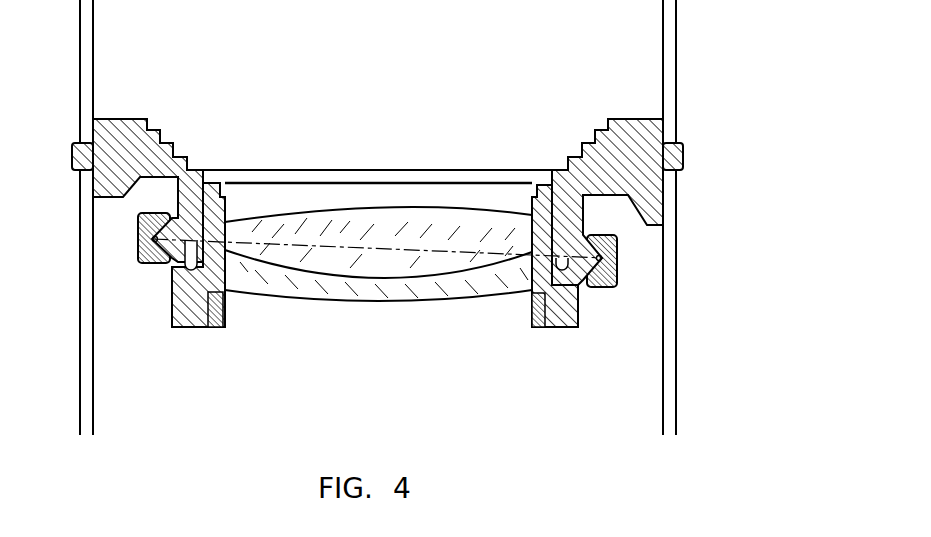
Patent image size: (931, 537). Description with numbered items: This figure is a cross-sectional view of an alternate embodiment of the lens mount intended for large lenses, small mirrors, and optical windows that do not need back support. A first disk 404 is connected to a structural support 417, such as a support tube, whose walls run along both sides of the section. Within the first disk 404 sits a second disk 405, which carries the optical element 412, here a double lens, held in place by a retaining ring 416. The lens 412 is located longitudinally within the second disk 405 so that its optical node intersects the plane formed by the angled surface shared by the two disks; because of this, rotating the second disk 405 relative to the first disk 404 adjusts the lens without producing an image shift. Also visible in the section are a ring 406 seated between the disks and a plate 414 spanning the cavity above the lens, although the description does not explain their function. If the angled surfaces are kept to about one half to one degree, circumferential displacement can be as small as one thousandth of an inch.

The first disk 404 is at (377, 161).
The second disk 405 is at (375, 290).
The clamp ring 406 is at (369, 327).
The optical element 412 is at (377, 302).
The spacer plate 414 is at (381, 110).
The retaining ring 416 is at (376, 344).
The structural support 417 is at (680, 380).